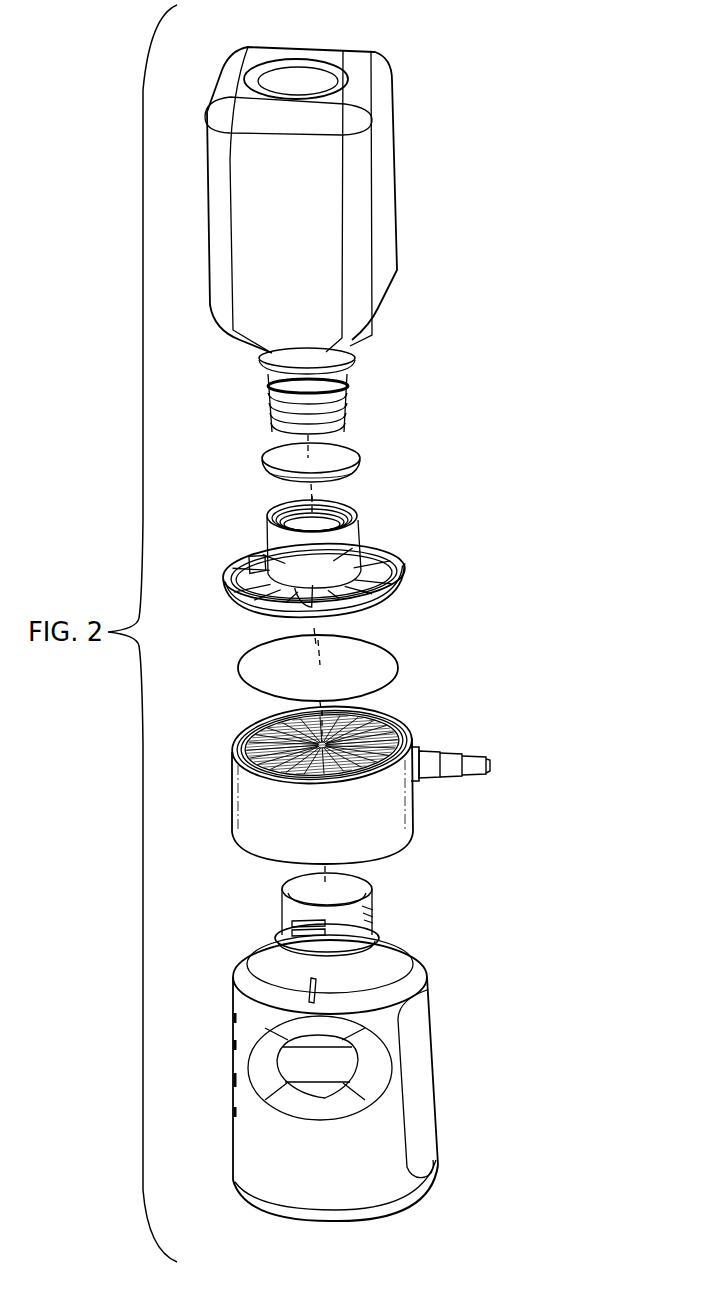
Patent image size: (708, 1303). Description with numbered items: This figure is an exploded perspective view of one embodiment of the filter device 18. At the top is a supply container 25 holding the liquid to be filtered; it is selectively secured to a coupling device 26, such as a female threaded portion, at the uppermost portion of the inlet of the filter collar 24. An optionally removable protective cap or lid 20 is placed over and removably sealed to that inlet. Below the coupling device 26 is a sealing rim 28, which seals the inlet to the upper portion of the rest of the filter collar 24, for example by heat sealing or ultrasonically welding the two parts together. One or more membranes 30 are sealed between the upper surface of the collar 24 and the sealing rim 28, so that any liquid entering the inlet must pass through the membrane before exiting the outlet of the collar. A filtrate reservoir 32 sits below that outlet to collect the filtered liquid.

The filter device 18 is at (548, 341).
The supply container 25 is at (363, 207).
The protective cap or lid 20 is at (341, 464).
The coupling device 26 is at (334, 519).
The sealing rim 28 is at (382, 573).
The membrane 30 is at (377, 660).
The filter collar 24 is at (377, 833).
The filtrate reservoir 32 is at (388, 1127).